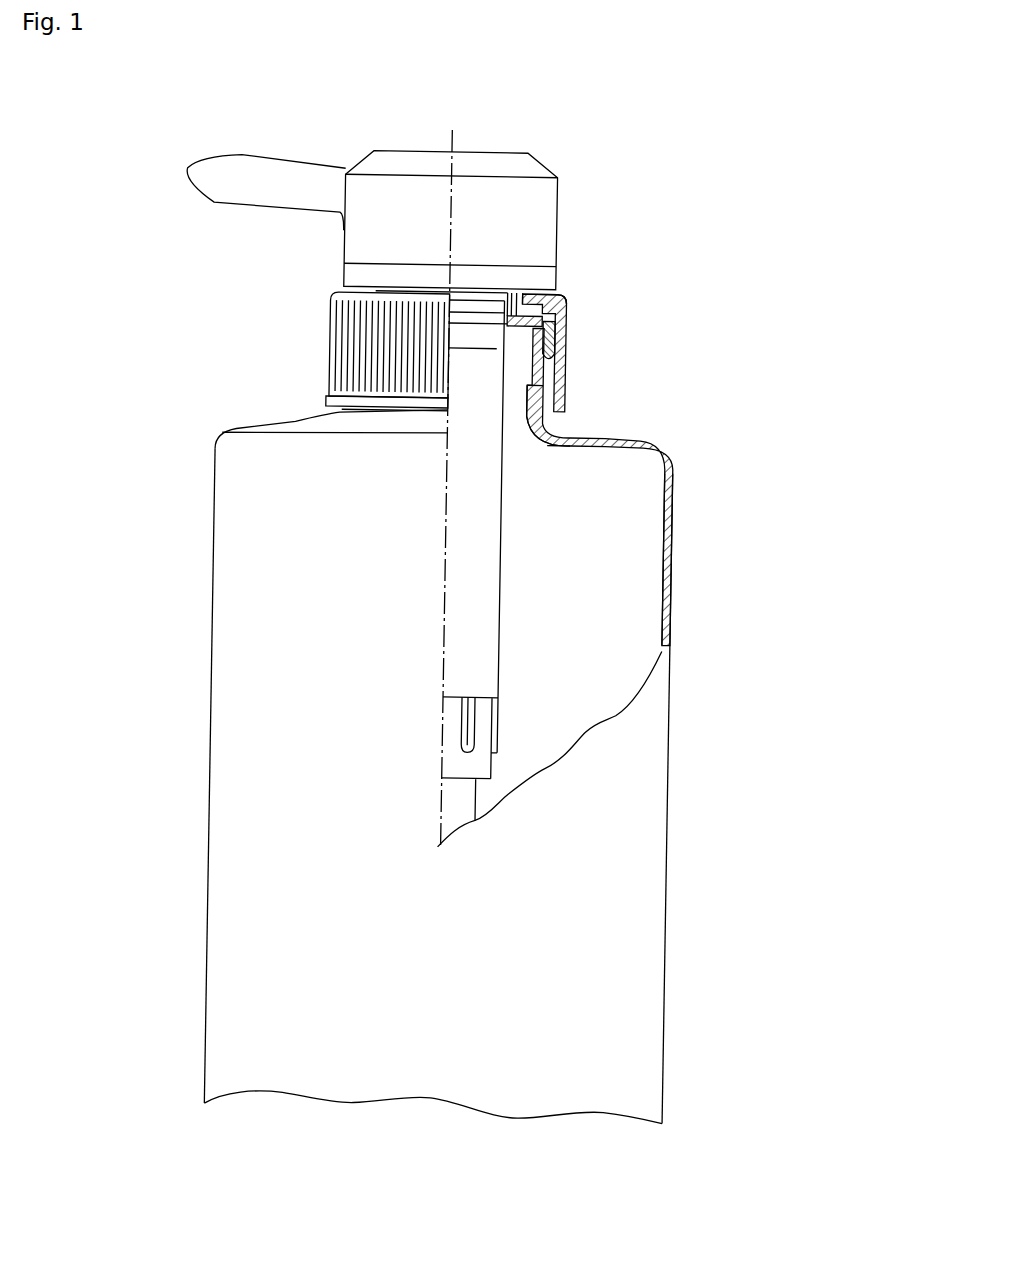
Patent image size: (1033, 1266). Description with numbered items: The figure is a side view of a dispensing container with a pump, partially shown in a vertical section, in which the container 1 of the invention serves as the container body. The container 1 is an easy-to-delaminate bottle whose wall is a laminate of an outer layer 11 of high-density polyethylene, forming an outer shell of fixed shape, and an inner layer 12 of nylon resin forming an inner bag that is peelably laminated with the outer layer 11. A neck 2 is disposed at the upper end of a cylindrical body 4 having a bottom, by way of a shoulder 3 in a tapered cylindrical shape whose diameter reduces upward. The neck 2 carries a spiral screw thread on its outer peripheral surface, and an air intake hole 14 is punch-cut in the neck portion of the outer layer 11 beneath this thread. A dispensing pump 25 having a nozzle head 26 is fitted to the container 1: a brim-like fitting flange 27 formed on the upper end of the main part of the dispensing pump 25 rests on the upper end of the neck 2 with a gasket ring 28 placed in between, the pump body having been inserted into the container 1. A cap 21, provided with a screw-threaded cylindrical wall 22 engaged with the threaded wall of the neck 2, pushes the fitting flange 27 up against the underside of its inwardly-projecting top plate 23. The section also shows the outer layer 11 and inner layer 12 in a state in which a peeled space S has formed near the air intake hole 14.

The container 1 is at (442, 723).
The neck 2 is at (574, 329).
The shoulder 3 is at (275, 429).
The cylindrical body 4 is at (221, 718).
The outer layer 11 is at (678, 458).
The inner layer 12 is at (674, 474).
The air intake hole 14 is at (561, 395).
The cap 21 is at (333, 315).
The screw-threaded cylindrical wall 22 is at (571, 345).
The inwardly-projecting top plate 23 is at (537, 296).
The dispensing pump 25 is at (481, 338).
The nozzle head 26 is at (410, 153).
The fitting flange 27 is at (525, 290).
The gasket ring 28 is at (562, 298).
The peeled space S is at (537, 435).